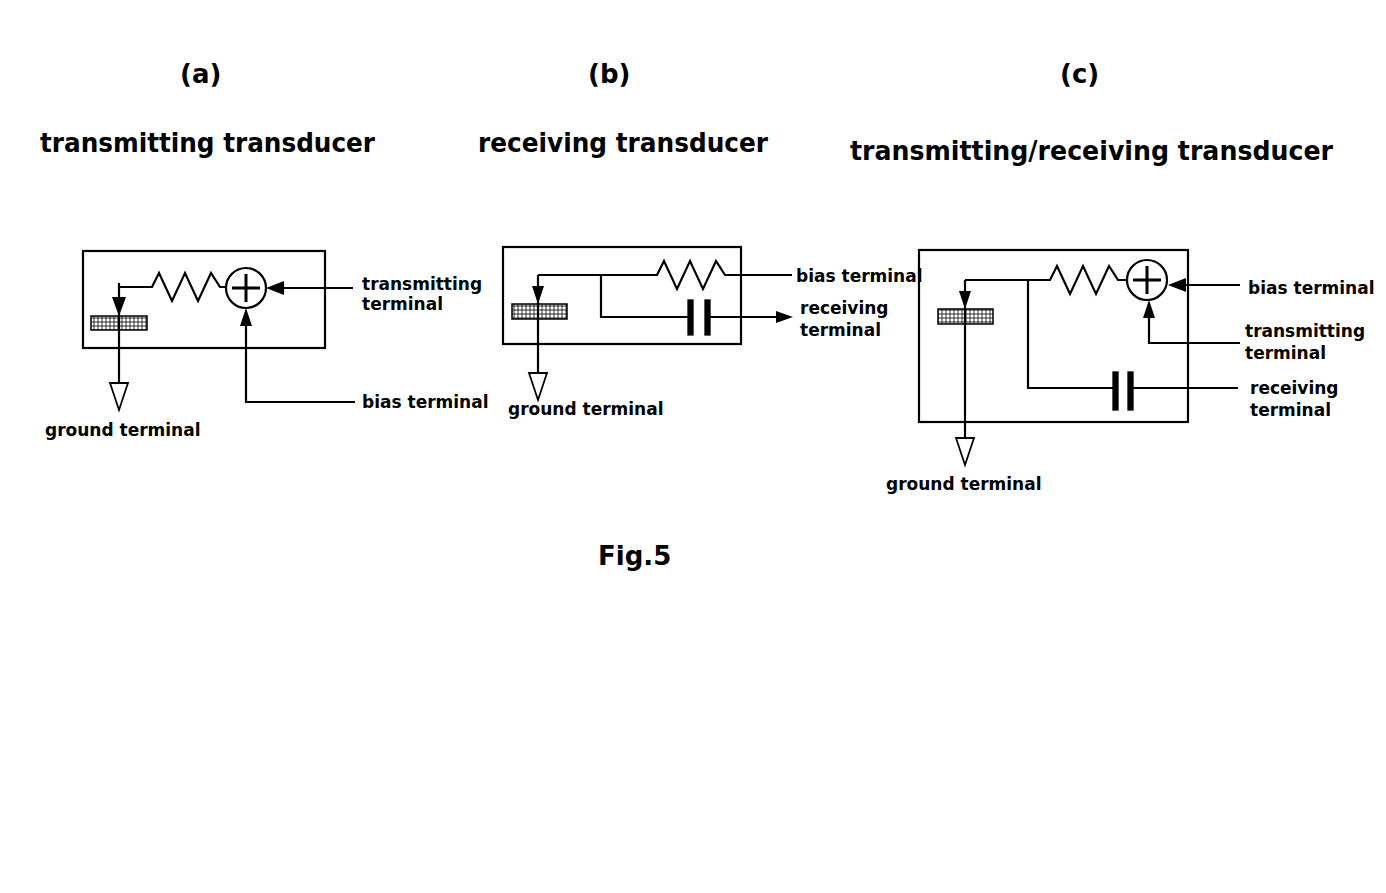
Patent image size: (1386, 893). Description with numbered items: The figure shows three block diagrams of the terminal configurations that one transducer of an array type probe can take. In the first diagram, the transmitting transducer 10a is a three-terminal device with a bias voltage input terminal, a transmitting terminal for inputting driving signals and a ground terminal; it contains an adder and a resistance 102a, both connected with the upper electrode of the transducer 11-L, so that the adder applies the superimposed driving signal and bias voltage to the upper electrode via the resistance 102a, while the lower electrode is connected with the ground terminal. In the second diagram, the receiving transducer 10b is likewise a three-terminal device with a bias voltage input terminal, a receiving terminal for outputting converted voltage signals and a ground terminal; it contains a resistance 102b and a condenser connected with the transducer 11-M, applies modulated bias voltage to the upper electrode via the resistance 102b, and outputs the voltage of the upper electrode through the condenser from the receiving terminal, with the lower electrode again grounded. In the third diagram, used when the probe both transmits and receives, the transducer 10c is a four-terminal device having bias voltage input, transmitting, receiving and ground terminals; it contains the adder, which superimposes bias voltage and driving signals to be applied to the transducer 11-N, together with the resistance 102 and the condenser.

The transmitting transducer 10a is at (150, 251).
The receiving transducer 10b is at (570, 247).
The transmitting/receiving transducer 10c is at (1016, 250).
The transducer 11-L is at (103, 316).
The transducer 11-M is at (524, 304).
The transducer 11-N is at (950, 309).
The resistance 102 is at (1070, 272).
The resistance 102a is at (172, 272).
The resistance 102b is at (678, 272).